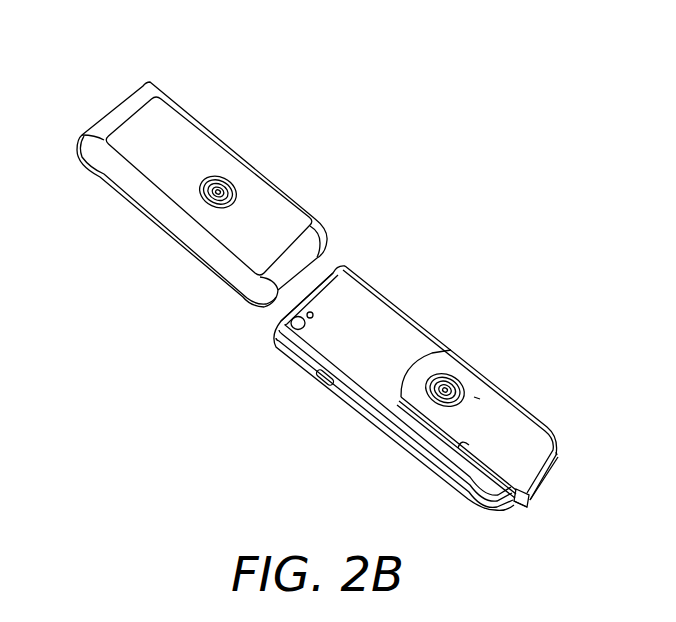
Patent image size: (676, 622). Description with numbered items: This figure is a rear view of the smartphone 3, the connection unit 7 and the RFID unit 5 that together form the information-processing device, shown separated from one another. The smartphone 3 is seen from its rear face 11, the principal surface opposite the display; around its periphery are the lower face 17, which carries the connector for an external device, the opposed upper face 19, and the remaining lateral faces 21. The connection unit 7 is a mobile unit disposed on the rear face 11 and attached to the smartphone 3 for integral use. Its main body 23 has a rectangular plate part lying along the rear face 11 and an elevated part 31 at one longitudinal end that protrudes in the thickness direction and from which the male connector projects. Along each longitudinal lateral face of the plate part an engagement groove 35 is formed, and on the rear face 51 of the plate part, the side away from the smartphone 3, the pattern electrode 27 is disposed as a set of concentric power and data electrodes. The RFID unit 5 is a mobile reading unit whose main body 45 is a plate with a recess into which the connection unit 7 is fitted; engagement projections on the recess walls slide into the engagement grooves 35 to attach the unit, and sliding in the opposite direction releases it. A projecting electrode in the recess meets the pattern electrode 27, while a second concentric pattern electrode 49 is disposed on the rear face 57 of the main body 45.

The smartphone 3 is at (395, 281).
The RFID unit 5 is at (196, 65).
The connection unit 7 is at (566, 446).
The rear face 11 is at (400, 322).
The lower face 17 is at (512, 502).
The upper face 19 is at (333, 268).
The lateral faces 21 is at (370, 410).
The main body 23 is at (518, 424).
The pattern electrode 27 is at (458, 375).
The elevated part 31 is at (528, 511).
The engagement groove 35 is at (463, 453).
The main body 45 is at (201, 137).
The pattern electrode 49 is at (241, 180).
The rear face 51 is at (477, 398).
The rear face 57 is at (267, 217).